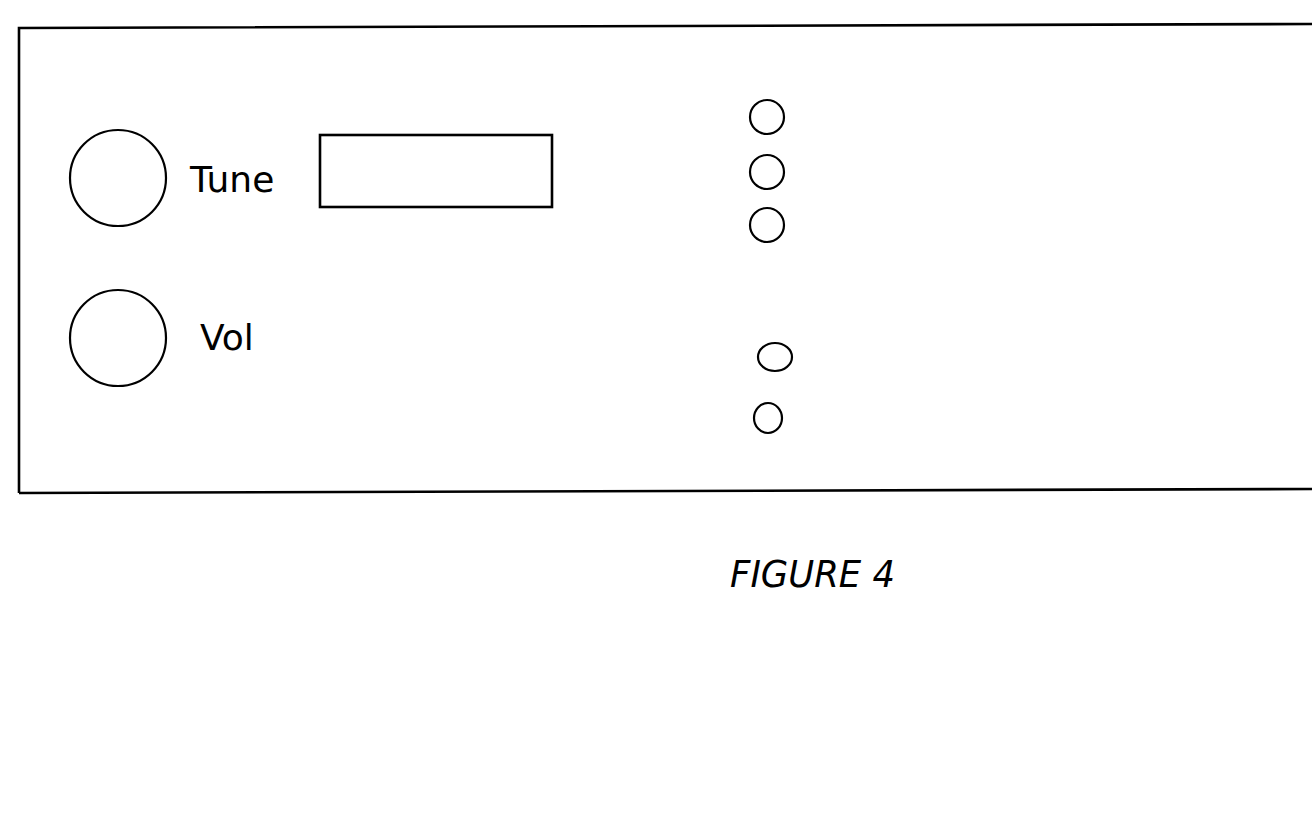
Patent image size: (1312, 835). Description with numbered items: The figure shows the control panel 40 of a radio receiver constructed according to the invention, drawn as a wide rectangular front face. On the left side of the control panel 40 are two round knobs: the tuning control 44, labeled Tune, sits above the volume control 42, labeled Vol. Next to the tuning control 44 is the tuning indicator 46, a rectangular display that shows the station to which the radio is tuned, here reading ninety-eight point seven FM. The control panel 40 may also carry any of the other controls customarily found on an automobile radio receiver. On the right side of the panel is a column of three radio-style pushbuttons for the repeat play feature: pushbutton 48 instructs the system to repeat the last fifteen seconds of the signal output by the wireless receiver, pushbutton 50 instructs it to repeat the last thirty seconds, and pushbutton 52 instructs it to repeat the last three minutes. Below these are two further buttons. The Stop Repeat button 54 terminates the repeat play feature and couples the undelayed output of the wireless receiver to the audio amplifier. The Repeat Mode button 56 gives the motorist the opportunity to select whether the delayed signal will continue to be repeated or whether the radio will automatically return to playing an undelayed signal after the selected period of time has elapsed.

The control panel 40 is at (546, 516).
The volume control 42 is at (138, 368).
The tuning control 44 is at (130, 160).
The tuning indicator 46 is at (420, 133).
The pushbutton 48 is at (748, 125).
The pushbutton 50 is at (746, 183).
The pushbutton 52 is at (752, 232).
The Stop Repeat button 54 is at (757, 358).
The Repeat Mode button 56 is at (753, 421).